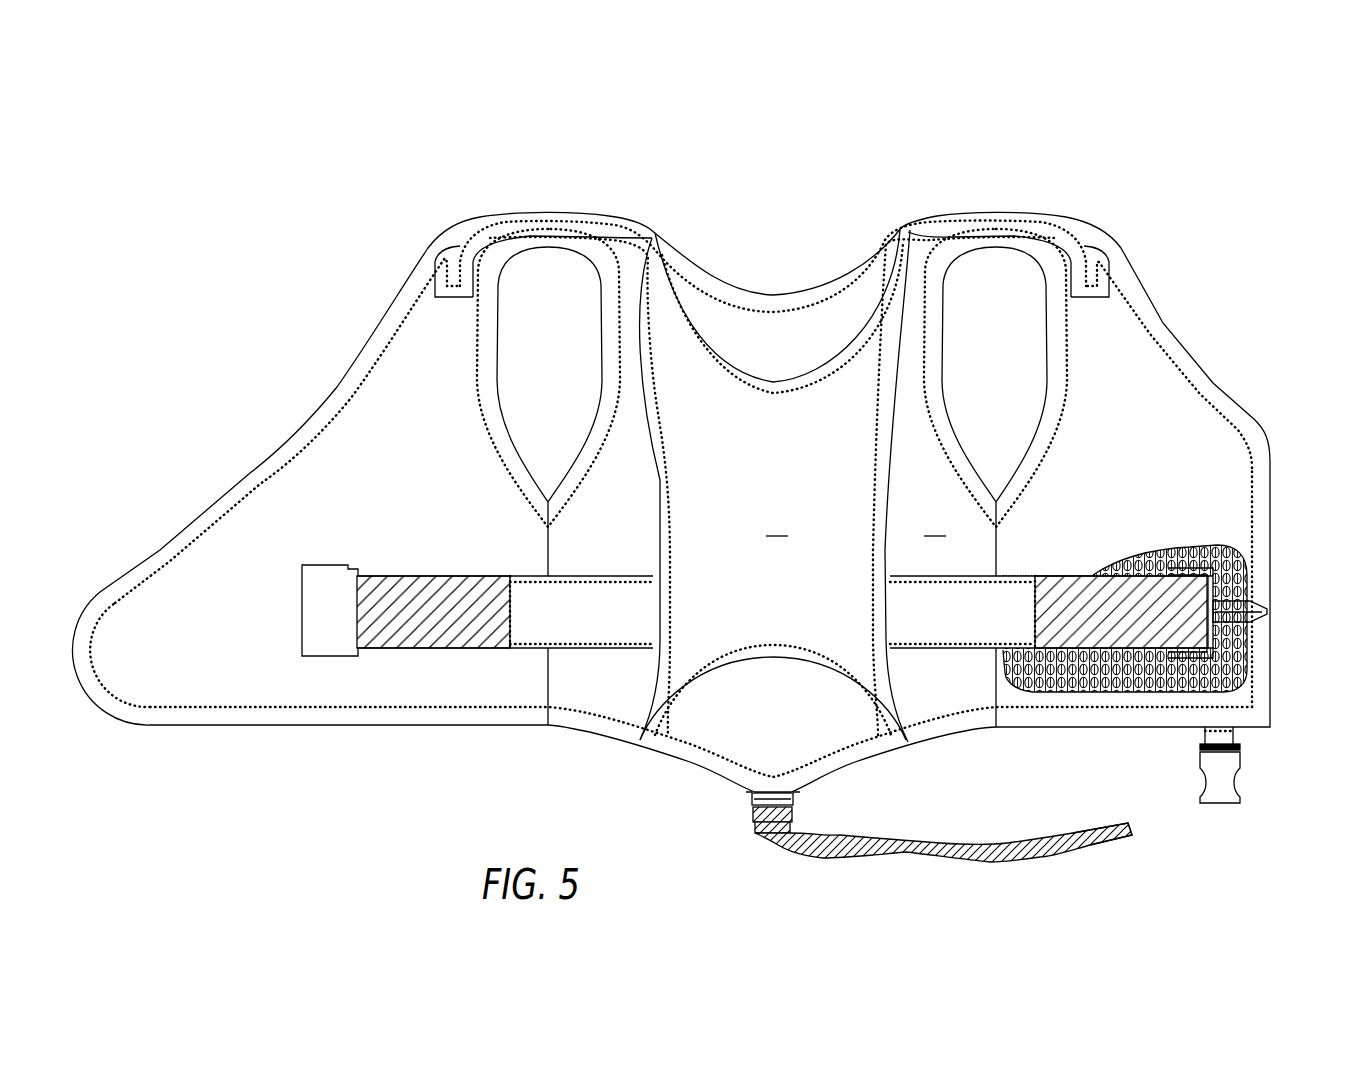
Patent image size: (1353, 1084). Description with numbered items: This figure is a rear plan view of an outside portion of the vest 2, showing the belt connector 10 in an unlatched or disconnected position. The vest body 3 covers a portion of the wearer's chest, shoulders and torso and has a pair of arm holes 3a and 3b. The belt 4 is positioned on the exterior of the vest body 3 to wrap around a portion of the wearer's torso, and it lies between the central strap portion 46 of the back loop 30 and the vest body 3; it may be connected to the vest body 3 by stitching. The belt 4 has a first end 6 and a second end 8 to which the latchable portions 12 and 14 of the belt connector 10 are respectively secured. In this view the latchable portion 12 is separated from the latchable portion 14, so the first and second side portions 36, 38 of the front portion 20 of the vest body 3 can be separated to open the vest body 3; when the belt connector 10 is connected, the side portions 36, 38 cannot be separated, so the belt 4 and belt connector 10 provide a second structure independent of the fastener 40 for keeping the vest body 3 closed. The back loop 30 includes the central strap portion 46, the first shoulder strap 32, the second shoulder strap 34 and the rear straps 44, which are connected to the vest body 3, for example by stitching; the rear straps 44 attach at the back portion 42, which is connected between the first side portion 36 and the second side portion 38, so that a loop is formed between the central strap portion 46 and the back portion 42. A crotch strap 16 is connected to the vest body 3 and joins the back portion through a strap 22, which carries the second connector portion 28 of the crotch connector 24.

The vest 2 is at (1193, 216).
The vest body 3 is at (1133, 363).
The arm hole 3a is at (995, 403).
The arm hole 3b is at (548, 477).
The belt 4 is at (470, 618).
The first end 6 is at (1098, 630).
The second end 8 is at (430, 618).
The belt connector 10 is at (318, 565).
The latchable portion 12 is at (1268, 612).
The latchable portion 14 is at (318, 618).
The crotch strap 16 is at (947, 855).
The front portion 20 is at (350, 418).
The strap 22 is at (1010, 855).
The crotch connector 24 is at (795, 800).
The second connector portion 28 is at (752, 815).
The back loop 30 is at (773, 622).
The first shoulder strap 32 is at (1077, 248).
The second shoulder strap 34 is at (475, 238).
The first side portion 36 is at (1258, 533).
The second side portion 38 is at (155, 638).
The fastener 40 is at (1255, 660).
The back portion 42 is at (960, 616).
The rear straps 44 is at (660, 740).
The central strap portion 46 is at (773, 336).